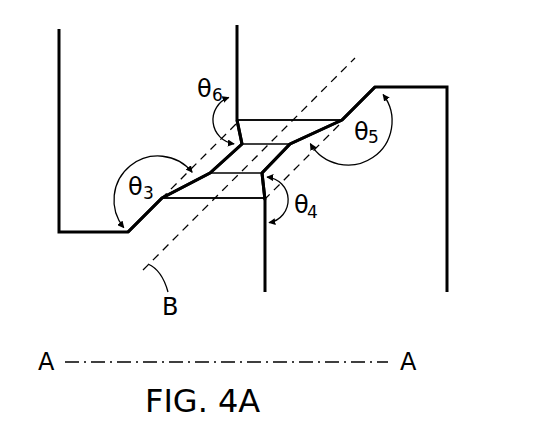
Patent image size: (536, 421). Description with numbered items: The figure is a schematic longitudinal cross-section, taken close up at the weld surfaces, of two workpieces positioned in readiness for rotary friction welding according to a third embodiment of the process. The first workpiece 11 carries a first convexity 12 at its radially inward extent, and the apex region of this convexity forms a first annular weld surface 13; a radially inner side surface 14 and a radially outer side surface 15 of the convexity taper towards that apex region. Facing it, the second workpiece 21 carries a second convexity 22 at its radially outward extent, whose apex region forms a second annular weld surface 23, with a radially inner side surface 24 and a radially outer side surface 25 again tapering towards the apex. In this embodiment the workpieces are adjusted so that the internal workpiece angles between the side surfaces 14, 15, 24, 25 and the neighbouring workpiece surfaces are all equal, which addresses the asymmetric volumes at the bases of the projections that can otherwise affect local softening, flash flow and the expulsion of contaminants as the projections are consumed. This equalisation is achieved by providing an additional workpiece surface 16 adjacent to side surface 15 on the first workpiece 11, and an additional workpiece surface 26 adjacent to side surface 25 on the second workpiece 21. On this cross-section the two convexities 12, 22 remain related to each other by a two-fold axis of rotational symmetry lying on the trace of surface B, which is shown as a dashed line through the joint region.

The first workpiece 11 is at (138, 50).
The first convexity 12 is at (190, 166).
The first annular weld surface 13 is at (227, 158).
The radially inner side surface 14 is at (191, 180).
The radially outer side surface 15 is at (243, 130).
The additional workpiece surface 16 is at (140, 230).
The second workpiece 21 is at (378, 302).
The second convexity 22 is at (311, 142).
The second annular weld surface 23 is at (283, 152).
The radially inner side surface 24 is at (259, 183).
The radially outer side surface 25 is at (331, 120).
The additional workpiece surface 26 is at (353, 110).